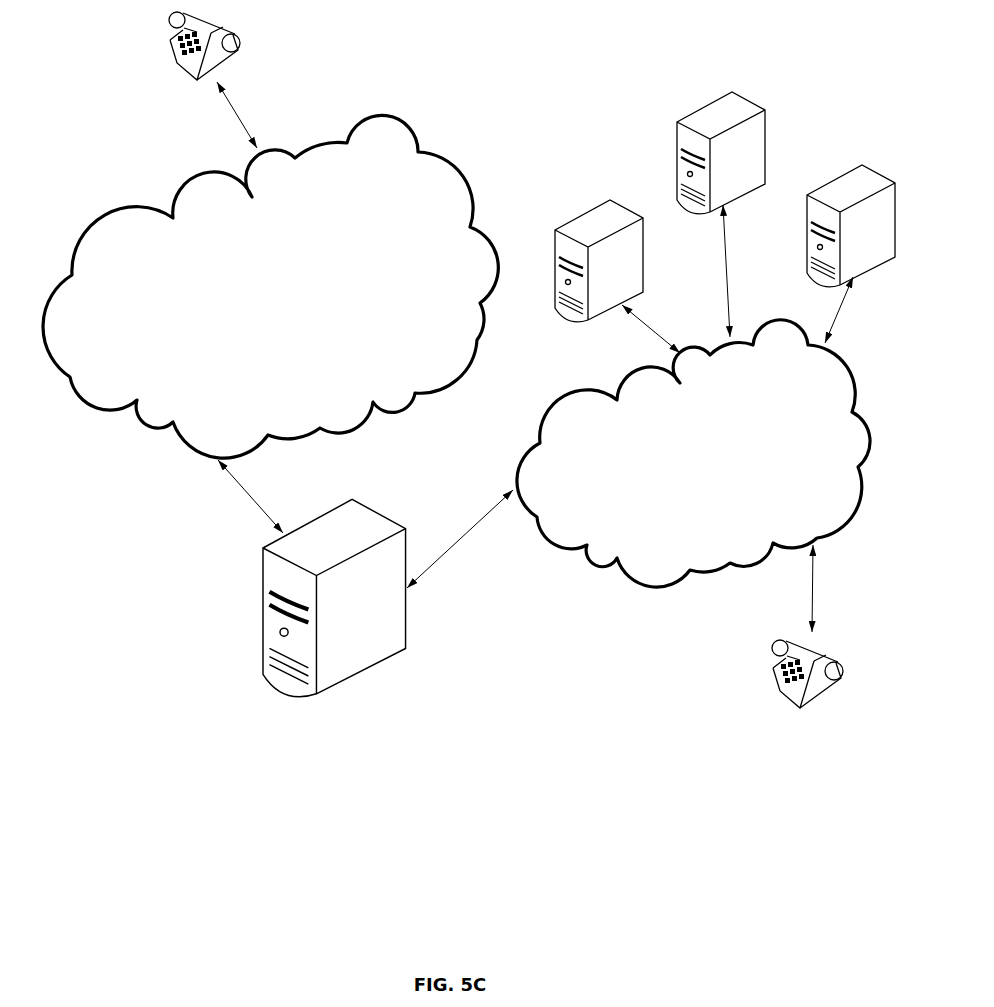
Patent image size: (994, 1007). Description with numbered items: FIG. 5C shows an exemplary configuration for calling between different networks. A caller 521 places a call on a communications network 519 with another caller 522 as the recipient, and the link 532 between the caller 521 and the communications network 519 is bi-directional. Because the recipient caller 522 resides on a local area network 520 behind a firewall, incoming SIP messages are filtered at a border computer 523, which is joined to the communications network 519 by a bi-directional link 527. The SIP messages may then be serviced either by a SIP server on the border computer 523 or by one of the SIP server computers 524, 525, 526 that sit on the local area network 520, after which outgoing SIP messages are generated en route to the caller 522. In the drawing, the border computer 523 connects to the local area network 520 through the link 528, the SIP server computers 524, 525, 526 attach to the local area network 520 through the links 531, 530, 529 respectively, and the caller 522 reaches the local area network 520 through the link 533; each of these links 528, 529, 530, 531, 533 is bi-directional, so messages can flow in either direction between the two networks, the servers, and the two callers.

The communications network 519 is at (73, 390).
The local area network 520 is at (642, 588).
The caller 521 is at (240, 65).
The caller 522 is at (830, 703).
The border computer 523 is at (378, 655).
The SIP server computer 524 is at (610, 202).
The SIP server computer 525 is at (732, 92).
The SIP server computer 526 is at (830, 187).
The link 527 is at (235, 496).
The link 528 is at (460, 539).
The link 529 is at (852, 310).
The link 530 is at (745, 271).
The link 531 is at (644, 329).
The link 532 is at (230, 115).
The link 533 is at (835, 588).